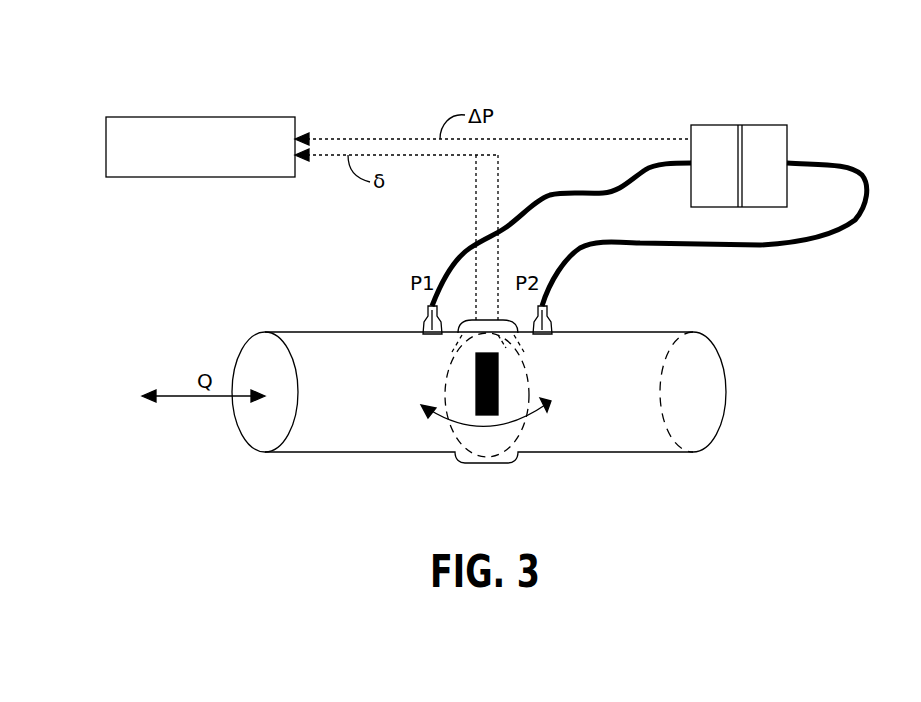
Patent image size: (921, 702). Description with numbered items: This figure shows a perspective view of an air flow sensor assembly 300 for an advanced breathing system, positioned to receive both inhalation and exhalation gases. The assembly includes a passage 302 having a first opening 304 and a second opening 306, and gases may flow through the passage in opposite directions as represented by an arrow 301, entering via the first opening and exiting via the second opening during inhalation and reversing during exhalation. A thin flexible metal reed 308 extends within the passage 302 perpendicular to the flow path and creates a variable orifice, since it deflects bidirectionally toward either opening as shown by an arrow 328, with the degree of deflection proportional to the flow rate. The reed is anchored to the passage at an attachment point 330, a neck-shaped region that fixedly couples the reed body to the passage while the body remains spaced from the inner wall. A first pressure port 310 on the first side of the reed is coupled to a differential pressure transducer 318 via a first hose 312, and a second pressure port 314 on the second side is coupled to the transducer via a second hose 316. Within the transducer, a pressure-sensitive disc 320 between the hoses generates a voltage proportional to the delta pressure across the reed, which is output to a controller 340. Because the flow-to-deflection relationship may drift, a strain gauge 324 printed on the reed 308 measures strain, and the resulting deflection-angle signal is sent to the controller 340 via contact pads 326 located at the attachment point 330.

The air flow sensor assembly 300 is at (841, 62).
The arrow 301 is at (187, 397).
The passage 302 is at (628, 332).
The first opening 304 is at (243, 352).
The second opening 306 is at (722, 358).
The reed 308 is at (527, 392).
The first pressure port 310 is at (422, 320).
The first hose 312 is at (607, 193).
The second pressure port 314 is at (552, 328).
The second hose 316 is at (735, 248).
The differential pressure transducer 318 is at (766, 125).
The pressure-sensitive disc 320 is at (740, 207).
The strain gauge 324 is at (474, 378).
The contact pads 326 is at (466, 320).
The arrow 328 is at (527, 422).
The attachment point 330 is at (503, 335).
The controller 340 is at (207, 117).